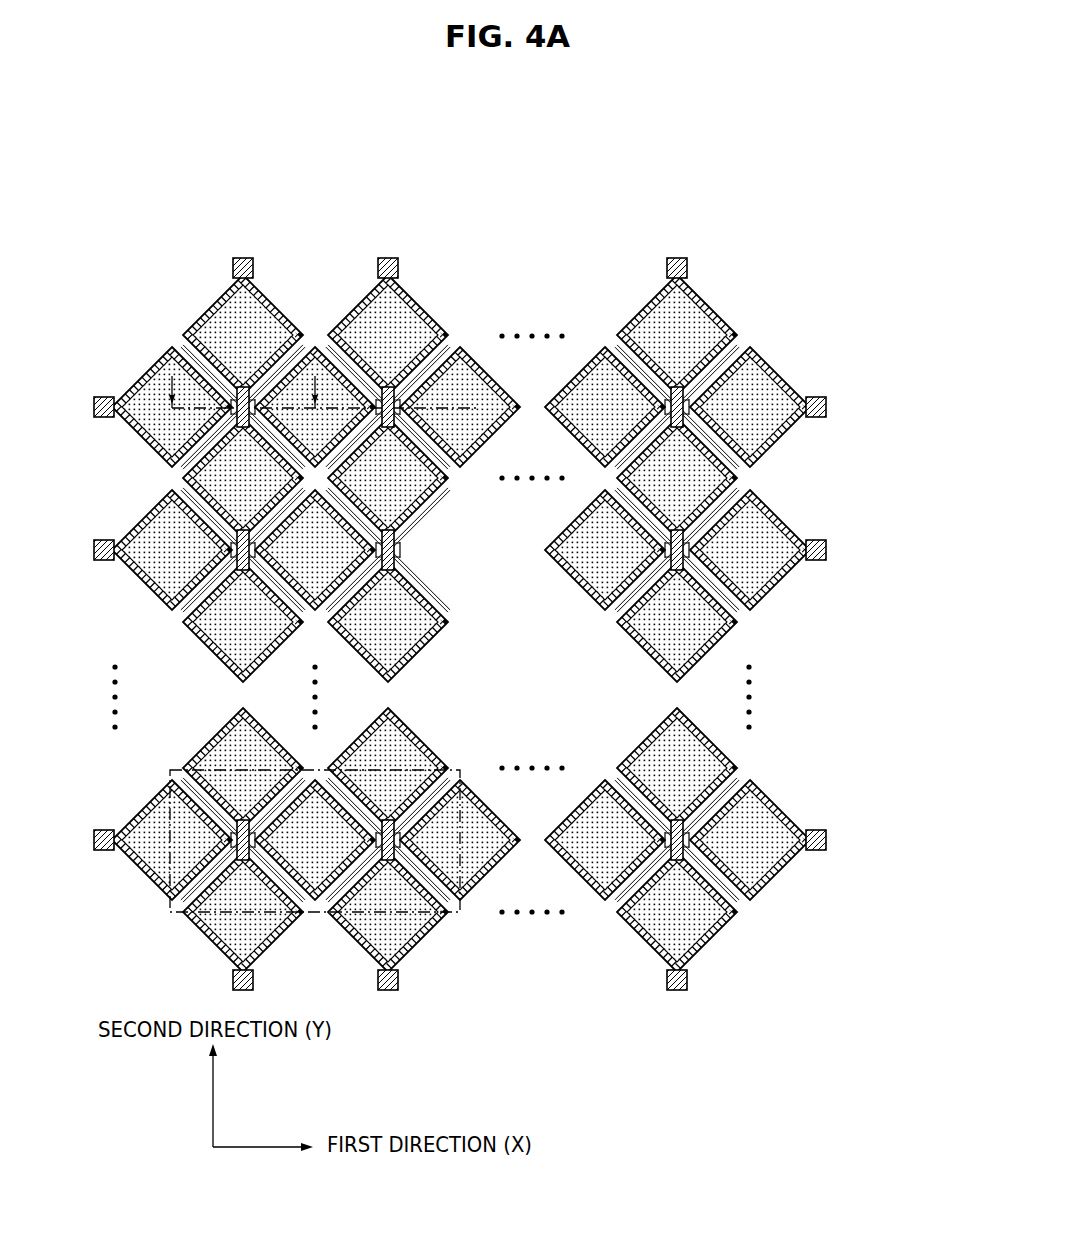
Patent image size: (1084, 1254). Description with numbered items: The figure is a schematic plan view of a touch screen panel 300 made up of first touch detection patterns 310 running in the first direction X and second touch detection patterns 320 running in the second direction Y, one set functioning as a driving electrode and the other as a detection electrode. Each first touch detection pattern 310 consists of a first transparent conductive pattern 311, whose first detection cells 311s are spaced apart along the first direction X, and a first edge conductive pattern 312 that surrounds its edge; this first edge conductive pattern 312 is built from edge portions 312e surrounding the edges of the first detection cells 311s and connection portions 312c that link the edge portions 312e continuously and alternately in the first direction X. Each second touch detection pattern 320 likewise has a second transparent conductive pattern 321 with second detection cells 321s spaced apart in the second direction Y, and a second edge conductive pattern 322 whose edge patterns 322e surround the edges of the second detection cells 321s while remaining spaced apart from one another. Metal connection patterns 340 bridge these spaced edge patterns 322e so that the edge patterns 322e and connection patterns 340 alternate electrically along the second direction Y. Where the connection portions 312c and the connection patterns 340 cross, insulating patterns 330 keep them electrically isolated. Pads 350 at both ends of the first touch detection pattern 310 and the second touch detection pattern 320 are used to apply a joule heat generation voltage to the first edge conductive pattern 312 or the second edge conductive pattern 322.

The touch screen panel 300 is at (800, 160).
The first touch detection pattern 310 is at (519, 391).
The first transparent conductive pattern 311 is at (772, 392).
The first detection cell 311s is at (600, 376).
The first edge conductive pattern 312 is at (773, 368).
The edge portion 312e is at (770, 588).
The connection portion 312c is at (742, 614).
The second touch detection pattern 320 is at (523, 609).
The second transparent conductive pattern 321 is at (707, 324).
The second detection cell 321s is at (703, 744).
The second edge conductive pattern 322 is at (708, 302).
The edge pattern 322e is at (641, 742).
The insulating pattern 330 is at (746, 487).
The connection pattern 340 is at (738, 479).
The pad 350 is at (828, 551).